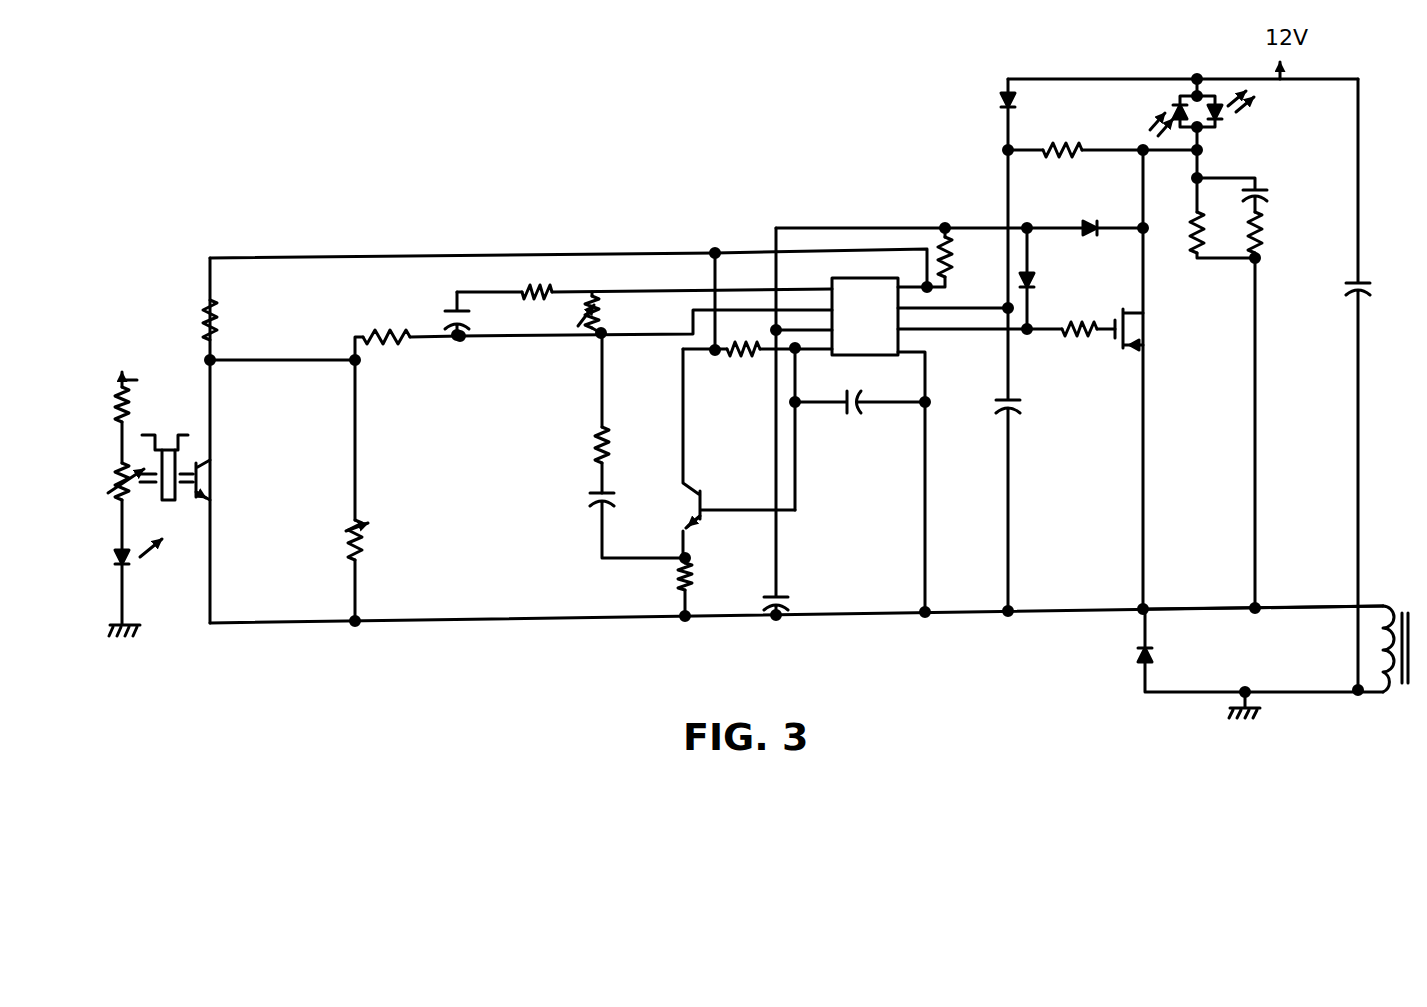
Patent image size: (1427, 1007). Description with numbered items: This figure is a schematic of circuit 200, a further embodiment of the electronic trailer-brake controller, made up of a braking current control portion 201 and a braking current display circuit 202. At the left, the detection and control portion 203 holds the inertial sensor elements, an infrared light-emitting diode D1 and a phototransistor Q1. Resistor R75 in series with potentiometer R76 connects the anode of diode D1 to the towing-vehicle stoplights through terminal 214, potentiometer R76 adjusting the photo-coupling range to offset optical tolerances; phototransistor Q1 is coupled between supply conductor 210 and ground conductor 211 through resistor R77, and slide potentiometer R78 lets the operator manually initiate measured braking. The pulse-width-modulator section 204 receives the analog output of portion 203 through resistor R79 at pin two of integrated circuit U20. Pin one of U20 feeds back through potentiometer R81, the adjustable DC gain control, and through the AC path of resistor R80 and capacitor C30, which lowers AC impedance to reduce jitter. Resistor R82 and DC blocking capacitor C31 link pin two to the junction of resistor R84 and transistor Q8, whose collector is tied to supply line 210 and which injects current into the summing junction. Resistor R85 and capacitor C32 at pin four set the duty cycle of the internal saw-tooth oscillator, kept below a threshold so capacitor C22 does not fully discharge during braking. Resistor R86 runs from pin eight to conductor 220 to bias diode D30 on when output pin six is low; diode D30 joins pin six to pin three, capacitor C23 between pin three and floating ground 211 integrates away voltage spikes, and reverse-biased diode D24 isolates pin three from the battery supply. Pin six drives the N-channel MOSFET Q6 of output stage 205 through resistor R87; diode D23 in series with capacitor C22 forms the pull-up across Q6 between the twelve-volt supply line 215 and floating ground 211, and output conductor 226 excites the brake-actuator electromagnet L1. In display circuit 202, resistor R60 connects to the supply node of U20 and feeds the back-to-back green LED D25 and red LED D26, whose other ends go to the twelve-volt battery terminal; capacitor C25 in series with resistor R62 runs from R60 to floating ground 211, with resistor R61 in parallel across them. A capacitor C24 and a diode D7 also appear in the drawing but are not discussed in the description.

The circuit 200 is at (753, 163).
The braking current control portion 201 is at (543, 228).
The braking current display generation means 202 is at (1207, 408).
The detection and control portion 203 is at (160, 637).
The variable pulse-width-modulator section 204 is at (836, 447).
The output stage 205 is at (1092, 407).
The supply conductor 210 is at (662, 250).
The ground conductor 211 is at (592, 620).
The terminal 214 is at (151, 380).
The twelve-volt supply line 215 is at (1122, 78).
The conductor 220 is at (875, 228).
The conductor 226 is at (1195, 606).
The resistor R75 is at (118, 417).
The potentiometer R76 is at (122, 466).
The resistor R77 is at (215, 320).
The potentiometer R78 is at (352, 530).
The resistor R79 is at (375, 333).
The resistor R80 is at (540, 292).
The potentiometer R81 is at (610, 315).
The resistor R82 is at (597, 457).
The resistor R84 is at (690, 582).
The resistor R85 is at (752, 358).
The resistor R86 is at (950, 268).
The resistor R87 is at (1097, 313).
The resistor R60 is at (1083, 132).
The resistor R61 is at (1222, 221).
The resistor R62 is at (1260, 246).
The capacitor C22 is at (1036, 398).
The capacitor C23 is at (781, 588).
The capacitor C24 is at (1362, 282).
The capacitor C25 is at (1257, 188).
The capacitor C30 is at (470, 306).
The DC blocking capacitor C31 is at (595, 496).
The capacitor C32 is at (858, 408).
The infrared light-emitting diode D1 is at (128, 566).
The diode D7 is at (1150, 652).
The diode D23 is at (1003, 102).
The diode D24 is at (1108, 202).
The green LED D25 is at (1224, 119).
The red LED D26 is at (1181, 115).
The diode D30 is at (1058, 277).
The phototransistor Q1 is at (203, 500).
The MOSFET element Q6 is at (1136, 348).
The transistor Q8 is at (701, 500).
The integrated circuit U20 is at (890, 331).
The inductor winding L1 is at (1392, 600).